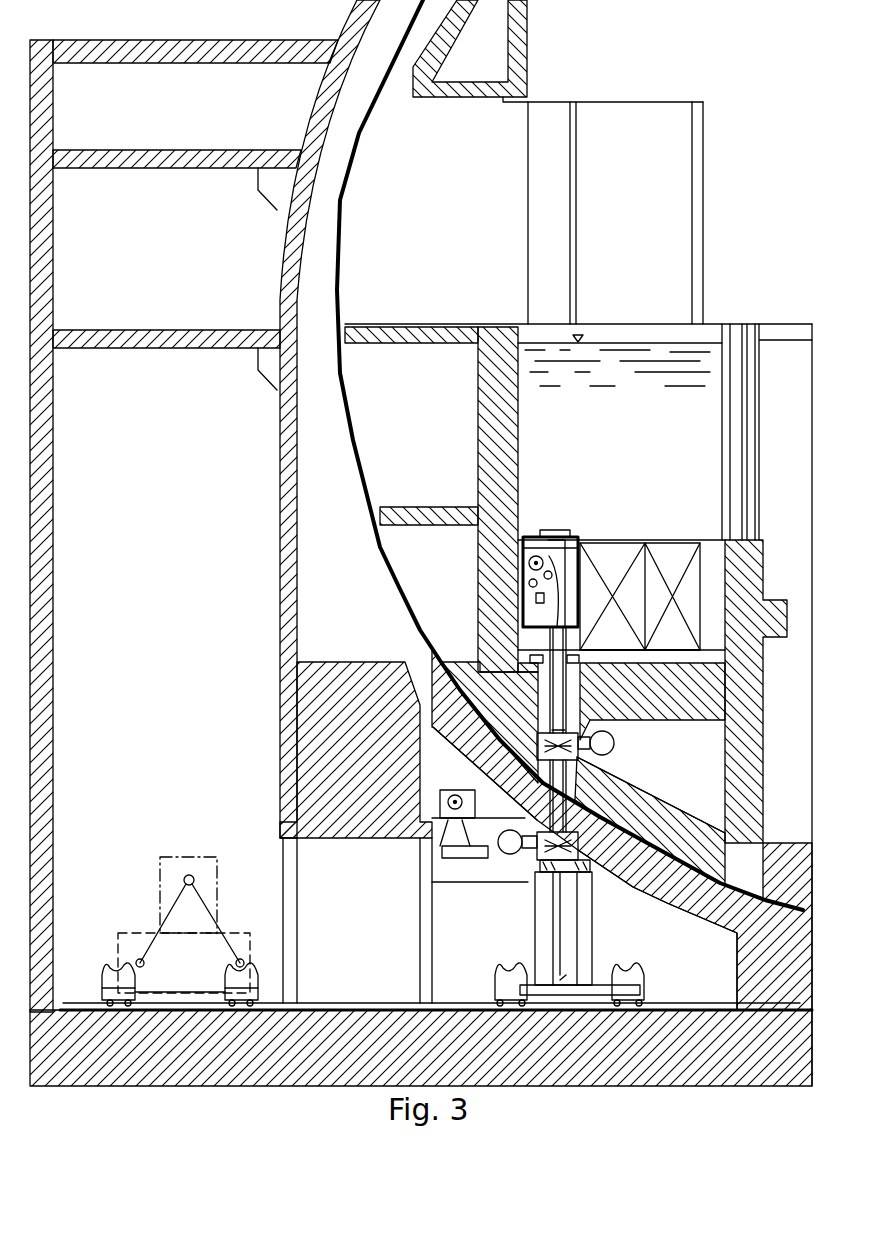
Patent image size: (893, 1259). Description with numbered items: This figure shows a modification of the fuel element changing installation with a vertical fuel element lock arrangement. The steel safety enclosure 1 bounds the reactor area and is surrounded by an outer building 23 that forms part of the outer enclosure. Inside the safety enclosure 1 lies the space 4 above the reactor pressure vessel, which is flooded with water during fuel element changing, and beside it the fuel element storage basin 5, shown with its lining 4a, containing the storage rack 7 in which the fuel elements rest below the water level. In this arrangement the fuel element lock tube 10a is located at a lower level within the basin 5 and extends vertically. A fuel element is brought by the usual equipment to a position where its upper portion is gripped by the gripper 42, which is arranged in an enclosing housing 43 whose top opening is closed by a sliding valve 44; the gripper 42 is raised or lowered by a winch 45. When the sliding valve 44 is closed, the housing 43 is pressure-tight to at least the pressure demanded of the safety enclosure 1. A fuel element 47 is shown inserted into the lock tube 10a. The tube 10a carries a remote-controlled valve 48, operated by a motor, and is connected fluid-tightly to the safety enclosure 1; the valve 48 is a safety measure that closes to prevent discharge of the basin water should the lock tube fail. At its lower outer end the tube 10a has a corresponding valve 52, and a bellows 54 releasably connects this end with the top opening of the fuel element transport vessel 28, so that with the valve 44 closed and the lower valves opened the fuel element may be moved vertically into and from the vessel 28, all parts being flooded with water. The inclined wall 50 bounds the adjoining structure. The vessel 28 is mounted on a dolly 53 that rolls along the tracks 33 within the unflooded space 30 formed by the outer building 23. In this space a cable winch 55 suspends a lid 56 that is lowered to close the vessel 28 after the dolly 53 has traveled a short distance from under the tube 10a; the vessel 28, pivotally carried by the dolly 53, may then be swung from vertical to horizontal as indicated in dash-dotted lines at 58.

The steel safety enclosure 1 is at (700, 887).
The space above the reactor pressure vessel 4 is at (798, 483).
The reactor well lining 4a is at (742, 406).
The fuel element storage basin 5 is at (720, 623).
The storage rack 7 is at (683, 645).
The fuel element lock tube 10a is at (566, 705).
The outer building 23 is at (166, 40).
The fuel element transport vessel 28 is at (592, 922).
The space 30 is at (714, 985).
The tracks 33 is at (327, 1005).
The gripper 42 is at (558, 620).
The enclosing housing 43 is at (578, 568).
The sliding valve 44 is at (553, 537).
The winch 45 is at (523, 565).
The fuel element 47 is at (566, 683).
The remote-controlled valve 48 is at (590, 757).
The inclined wall 50 is at (577, 802).
The valve 52 is at (603, 828).
The dolly 53 is at (583, 1010).
The bellows 54 is at (590, 863).
The cable winch 55 is at (453, 792).
The lid 56 is at (442, 852).
The horizontal position of transport vessel 58 is at (217, 906).